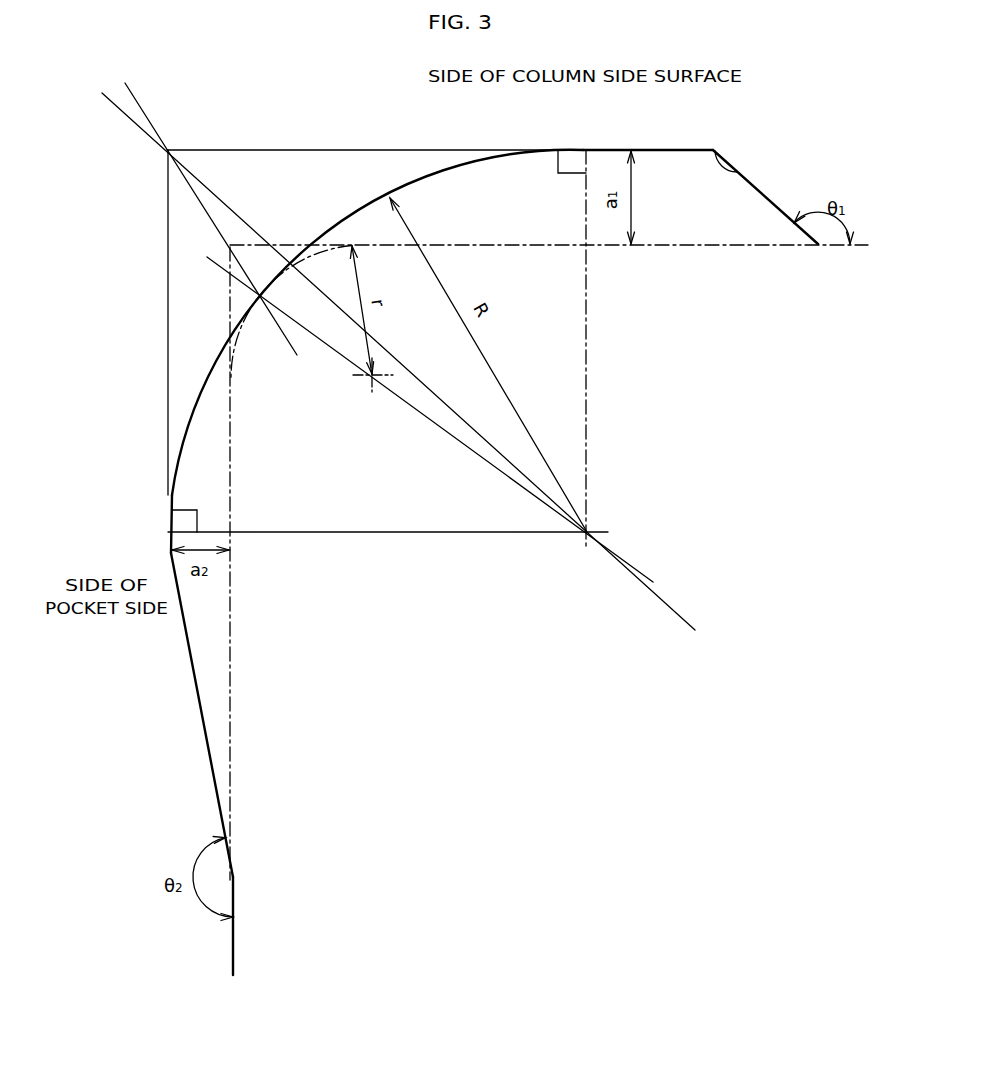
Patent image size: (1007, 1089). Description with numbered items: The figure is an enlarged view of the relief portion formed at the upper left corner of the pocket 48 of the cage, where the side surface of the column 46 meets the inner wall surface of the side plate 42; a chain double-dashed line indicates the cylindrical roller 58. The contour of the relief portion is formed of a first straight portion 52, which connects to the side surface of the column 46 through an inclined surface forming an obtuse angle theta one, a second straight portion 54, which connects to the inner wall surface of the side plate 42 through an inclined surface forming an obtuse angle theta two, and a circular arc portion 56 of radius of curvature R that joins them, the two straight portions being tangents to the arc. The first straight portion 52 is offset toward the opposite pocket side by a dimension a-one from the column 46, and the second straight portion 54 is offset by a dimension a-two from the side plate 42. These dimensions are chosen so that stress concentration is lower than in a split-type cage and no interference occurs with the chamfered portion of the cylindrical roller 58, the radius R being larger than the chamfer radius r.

The side plate 42 is at (130, 505).
The column 46 is at (696, 120).
The pocket 48 is at (676, 416).
The first straight portion 52 is at (737, 173).
The second straight portion 54 is at (192, 543).
The circular arc portion 56 is at (370, 221).
The cylindrical roller 58 is at (510, 244).